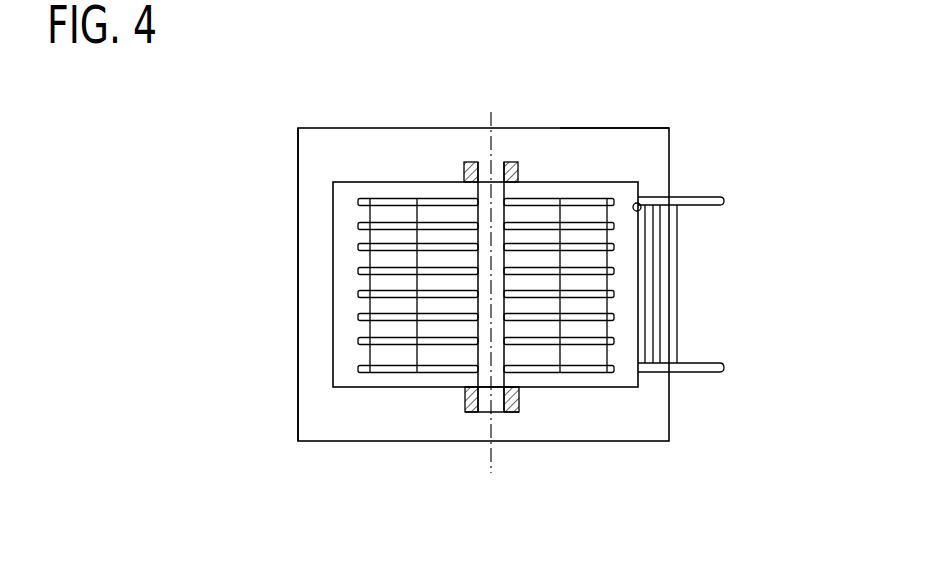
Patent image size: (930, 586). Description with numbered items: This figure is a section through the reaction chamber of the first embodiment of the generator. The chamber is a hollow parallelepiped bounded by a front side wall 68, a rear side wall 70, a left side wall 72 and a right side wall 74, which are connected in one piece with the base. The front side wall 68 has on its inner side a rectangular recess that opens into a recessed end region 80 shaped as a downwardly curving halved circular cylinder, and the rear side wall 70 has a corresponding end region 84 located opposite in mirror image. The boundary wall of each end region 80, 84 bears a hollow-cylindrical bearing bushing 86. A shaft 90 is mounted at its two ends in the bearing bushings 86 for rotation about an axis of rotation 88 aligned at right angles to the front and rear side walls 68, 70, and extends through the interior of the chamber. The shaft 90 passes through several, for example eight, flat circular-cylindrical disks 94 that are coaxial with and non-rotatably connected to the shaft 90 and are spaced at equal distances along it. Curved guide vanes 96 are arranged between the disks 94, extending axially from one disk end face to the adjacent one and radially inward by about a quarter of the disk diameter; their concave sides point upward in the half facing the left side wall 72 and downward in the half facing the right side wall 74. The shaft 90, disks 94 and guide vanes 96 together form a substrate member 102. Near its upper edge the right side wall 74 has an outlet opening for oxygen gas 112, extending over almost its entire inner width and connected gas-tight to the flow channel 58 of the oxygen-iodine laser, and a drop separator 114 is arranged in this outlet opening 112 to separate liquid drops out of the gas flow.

The flow channel 58 is at (722, 206).
The front side wall 68 is at (638, 422).
The rear side wall 70 is at (627, 128).
The left side wall 72 is at (307, 223).
The right side wall 74 is at (660, 377).
The recessed end region 80 is at (478, 412).
The end region 84 is at (477, 162).
The bearing bushing 86 is at (512, 162).
The axis of rotation 88 is at (472, 385).
The shaft 90 is at (496, 187).
The disks 94 is at (370, 375).
The guide vanes 96 is at (370, 305).
The substrate member 102 is at (407, 243).
The outlet opening for oxygen gas 112 is at (640, 204).
The drop separator 114 is at (665, 282).